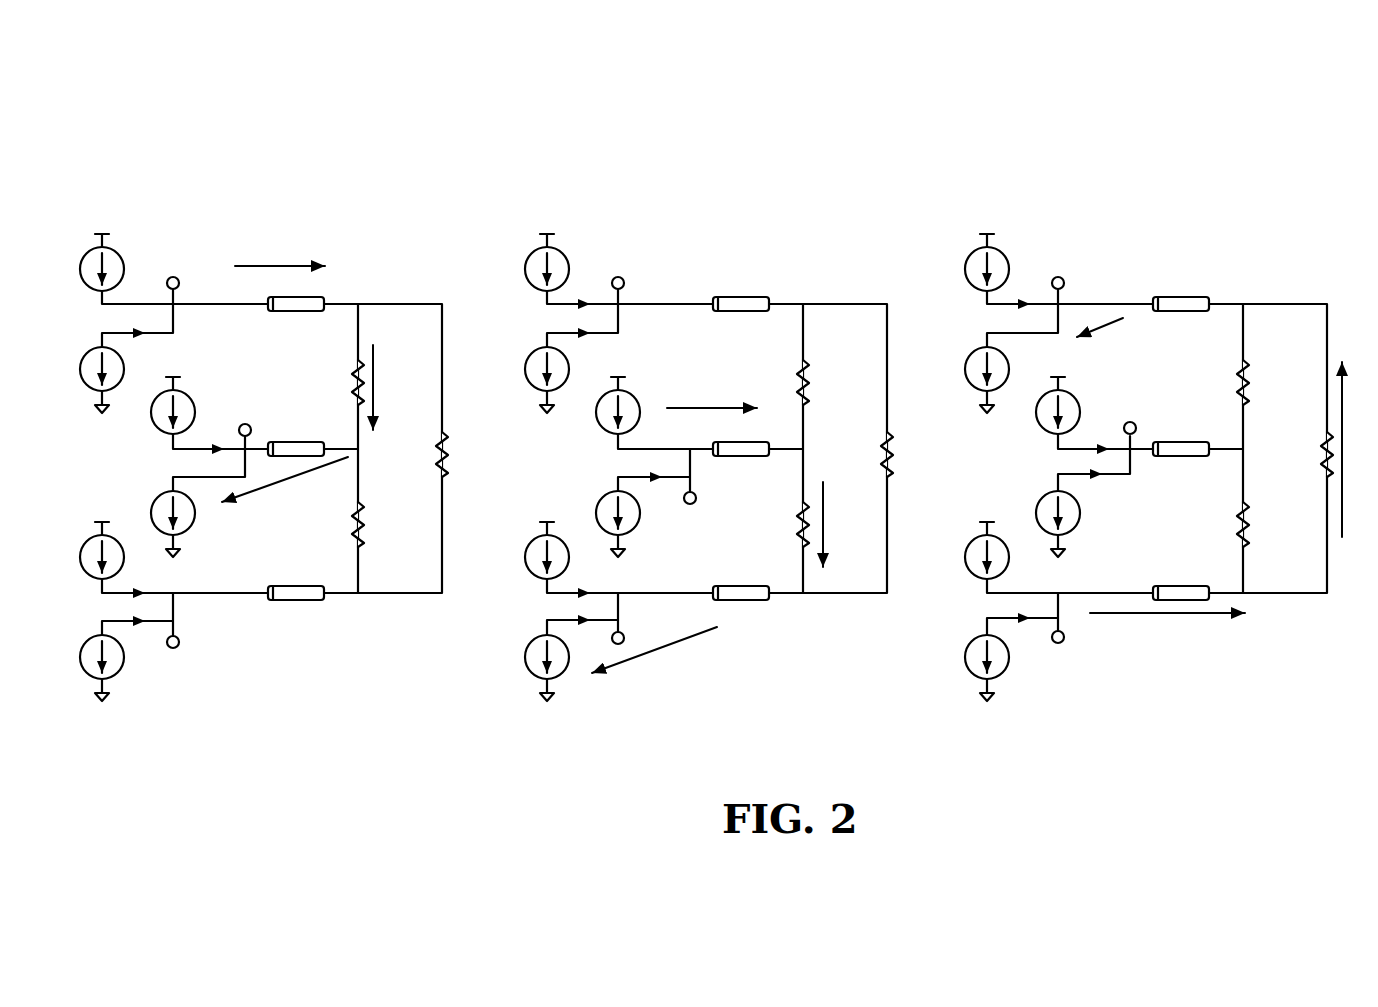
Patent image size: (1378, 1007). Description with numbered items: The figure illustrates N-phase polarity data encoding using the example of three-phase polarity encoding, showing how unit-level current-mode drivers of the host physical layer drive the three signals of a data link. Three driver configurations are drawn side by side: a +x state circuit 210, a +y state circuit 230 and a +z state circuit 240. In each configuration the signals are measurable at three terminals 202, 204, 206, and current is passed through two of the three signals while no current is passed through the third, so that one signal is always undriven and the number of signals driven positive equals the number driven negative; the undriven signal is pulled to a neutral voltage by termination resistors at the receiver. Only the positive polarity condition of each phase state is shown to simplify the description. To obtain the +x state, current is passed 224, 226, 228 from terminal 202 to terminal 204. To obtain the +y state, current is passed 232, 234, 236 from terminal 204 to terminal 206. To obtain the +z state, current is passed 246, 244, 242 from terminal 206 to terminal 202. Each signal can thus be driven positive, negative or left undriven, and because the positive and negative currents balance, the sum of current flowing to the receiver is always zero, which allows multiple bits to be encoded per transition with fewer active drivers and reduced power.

The +x state driver circuit 210 is at (128, 136).
The +y state driver circuit 230 is at (718, 406).
The +z state driver circuit 240 is at (1133, 397).
The terminal 202 is at (174, 277).
The terminal 204 is at (244, 424).
The terminal 206 is at (177, 647).
The current flow in +x state 224 is at (280, 266).
The current flow in +x state 226 is at (373, 345).
The current flow in +x state 228 is at (305, 473).
The current flow in +y state 232 is at (710, 382).
The current flow in +y state 234 is at (882, 533).
The current flow in +y state 236 is at (654, 673).
The current flow in +z state 242 is at (1131, 286).
The current flow in +z state 244 is at (1299, 461).
The current flow in +z state 246 is at (1152, 650).